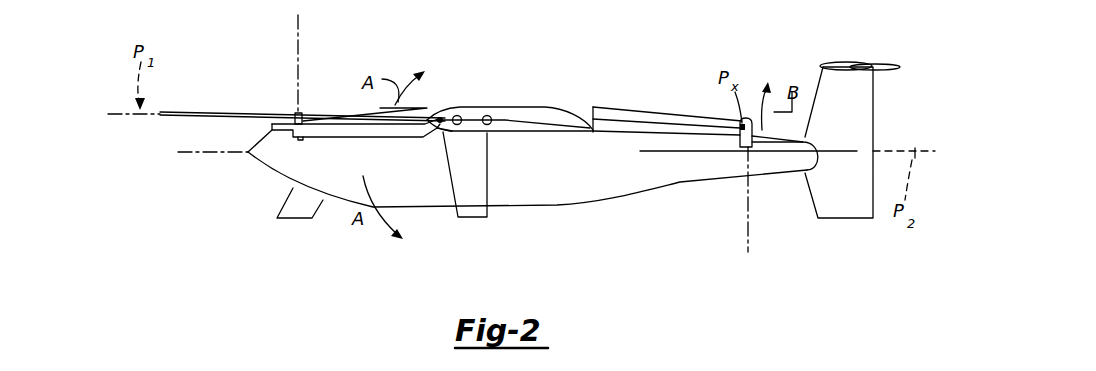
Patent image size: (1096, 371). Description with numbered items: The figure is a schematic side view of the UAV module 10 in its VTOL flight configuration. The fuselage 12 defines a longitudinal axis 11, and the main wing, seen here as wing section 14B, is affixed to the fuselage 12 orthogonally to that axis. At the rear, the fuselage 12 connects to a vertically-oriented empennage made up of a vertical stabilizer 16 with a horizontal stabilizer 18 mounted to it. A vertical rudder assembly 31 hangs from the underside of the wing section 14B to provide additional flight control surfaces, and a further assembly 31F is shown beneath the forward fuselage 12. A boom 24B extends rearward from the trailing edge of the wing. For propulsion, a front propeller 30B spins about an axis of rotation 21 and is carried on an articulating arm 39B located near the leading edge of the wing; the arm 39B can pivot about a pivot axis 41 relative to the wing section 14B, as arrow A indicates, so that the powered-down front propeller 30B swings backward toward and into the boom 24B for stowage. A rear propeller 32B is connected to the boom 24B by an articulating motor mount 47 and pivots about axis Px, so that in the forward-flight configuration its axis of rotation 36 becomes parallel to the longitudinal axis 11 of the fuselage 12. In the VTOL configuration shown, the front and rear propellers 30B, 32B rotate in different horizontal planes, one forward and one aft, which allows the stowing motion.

The UAV module 10 is at (744, 38).
The longitudinal axis 11 is at (197, 158).
The fuselage 12 is at (612, 174).
The wing section 14B is at (507, 112).
The vertical stabilizer 16 is at (858, 109).
The horizontal stabilizer 18 is at (889, 62).
The axis of rotation 21 is at (294, 30).
The boom 24B is at (634, 106).
The front propeller 30B is at (262, 111).
The vertical rudder assembly 31 is at (470, 177).
The forward pylon 31F is at (300, 213).
The rear propeller 32B is at (783, 153).
The axis of rotation 36 is at (748, 249).
The articulating arm 39B is at (382, 138).
The pivot axis 41 is at (438, 118).
The articulating motor mount 47 is at (740, 142).